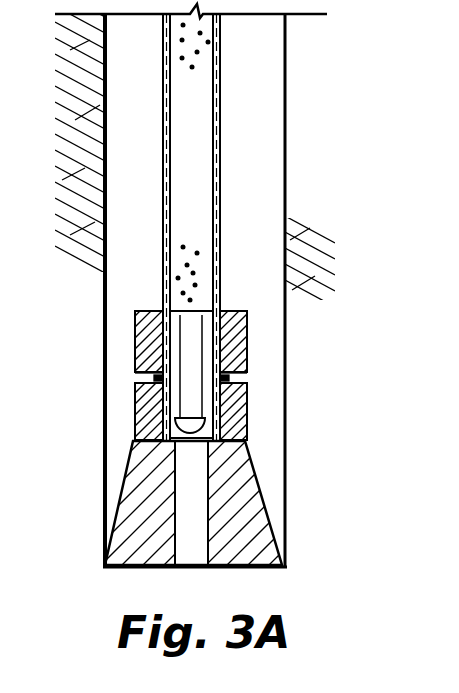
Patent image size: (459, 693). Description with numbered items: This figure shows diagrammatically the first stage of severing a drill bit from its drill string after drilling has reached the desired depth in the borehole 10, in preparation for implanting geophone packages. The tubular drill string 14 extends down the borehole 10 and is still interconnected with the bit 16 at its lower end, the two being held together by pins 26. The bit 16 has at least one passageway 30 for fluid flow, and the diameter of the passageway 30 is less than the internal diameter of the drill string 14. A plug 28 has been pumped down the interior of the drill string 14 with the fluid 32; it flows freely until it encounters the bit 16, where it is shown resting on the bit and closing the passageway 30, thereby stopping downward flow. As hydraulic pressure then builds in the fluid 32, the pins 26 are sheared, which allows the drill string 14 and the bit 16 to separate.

The borehole 10 is at (280, 203).
The tubular drill string 14 is at (225, 155).
The drill bit 16 is at (212, 437).
The pins 26 is at (140, 376).
The plug 28 is at (249, 374).
The passageway 30 is at (187, 480).
The fluid 32 is at (202, 77).